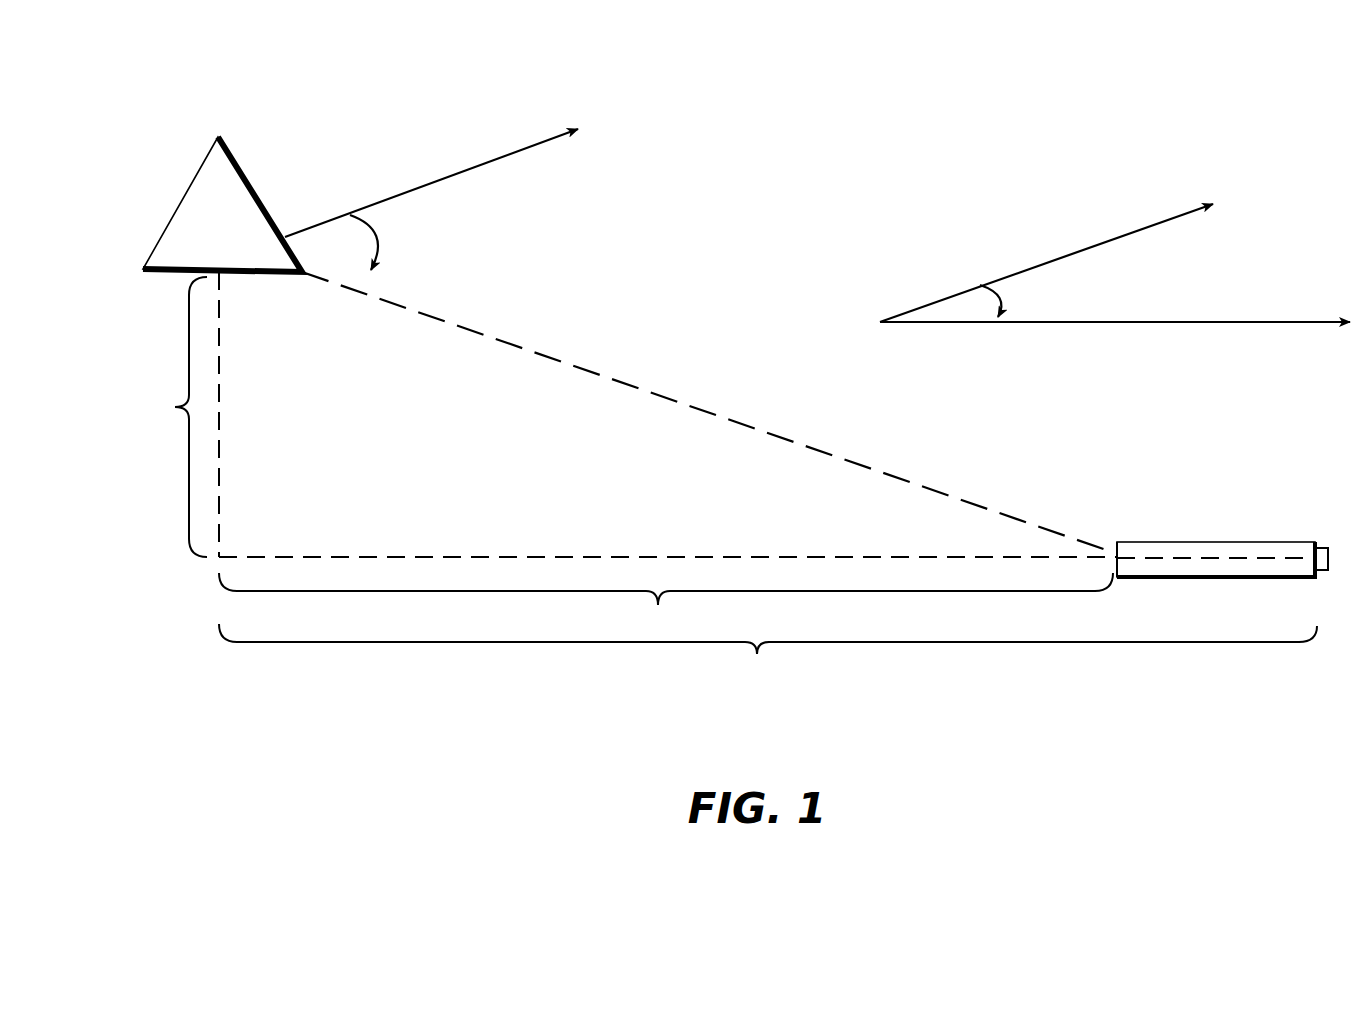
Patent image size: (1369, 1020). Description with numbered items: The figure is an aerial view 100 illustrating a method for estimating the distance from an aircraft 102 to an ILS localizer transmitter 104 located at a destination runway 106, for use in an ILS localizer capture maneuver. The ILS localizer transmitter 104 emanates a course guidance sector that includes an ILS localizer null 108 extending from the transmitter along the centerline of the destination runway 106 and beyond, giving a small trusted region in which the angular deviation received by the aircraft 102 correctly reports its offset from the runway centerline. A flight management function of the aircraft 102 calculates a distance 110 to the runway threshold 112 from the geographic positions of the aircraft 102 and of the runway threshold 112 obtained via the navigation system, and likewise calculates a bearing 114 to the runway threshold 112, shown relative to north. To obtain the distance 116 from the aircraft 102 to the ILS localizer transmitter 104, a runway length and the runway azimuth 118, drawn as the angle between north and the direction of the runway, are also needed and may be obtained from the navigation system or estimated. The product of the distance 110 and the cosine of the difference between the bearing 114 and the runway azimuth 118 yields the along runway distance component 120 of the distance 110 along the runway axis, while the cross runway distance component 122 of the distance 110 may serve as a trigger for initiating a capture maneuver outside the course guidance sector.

The aerial view 100 is at (1208, 128).
The aircraft 102 is at (218, 135).
The ILS localizer transmitter 104 is at (1320, 547).
The destination runway 106 is at (1243, 540).
The ILS localizer null 108 is at (885, 556).
The distance to runway threshold 110 is at (708, 412).
The runway threshold 112 is at (1117, 541).
The bearing to runway threshold 114 is at (495, 202).
The distance to ILS localizer transmitter 116 is at (768, 668).
The runway azimuth 118 is at (1115, 274).
The along runway distance component 120 is at (666, 602).
The cross runway distance component 122 is at (176, 414).